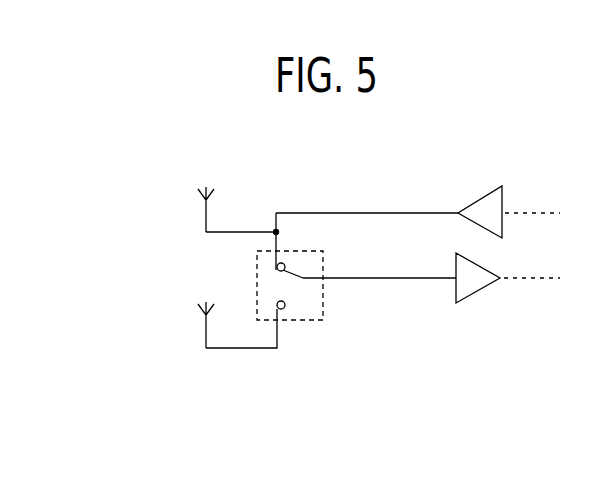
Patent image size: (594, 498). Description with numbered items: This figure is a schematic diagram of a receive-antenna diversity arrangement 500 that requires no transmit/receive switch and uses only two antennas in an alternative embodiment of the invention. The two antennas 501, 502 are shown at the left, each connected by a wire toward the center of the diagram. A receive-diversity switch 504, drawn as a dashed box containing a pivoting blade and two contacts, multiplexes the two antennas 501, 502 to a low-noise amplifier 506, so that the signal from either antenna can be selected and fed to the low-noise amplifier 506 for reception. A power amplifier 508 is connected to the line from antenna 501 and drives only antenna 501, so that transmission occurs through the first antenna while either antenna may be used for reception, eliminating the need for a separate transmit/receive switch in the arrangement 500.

The receive-antenna diversity arrangement 500 is at (441, 125).
The antenna 501 is at (205, 217).
The antenna 502 is at (205, 331).
The receive-diversity switch 504 is at (307, 251).
The low-noise amplifier 506 is at (456, 292).
The power amplifier 508 is at (485, 195).